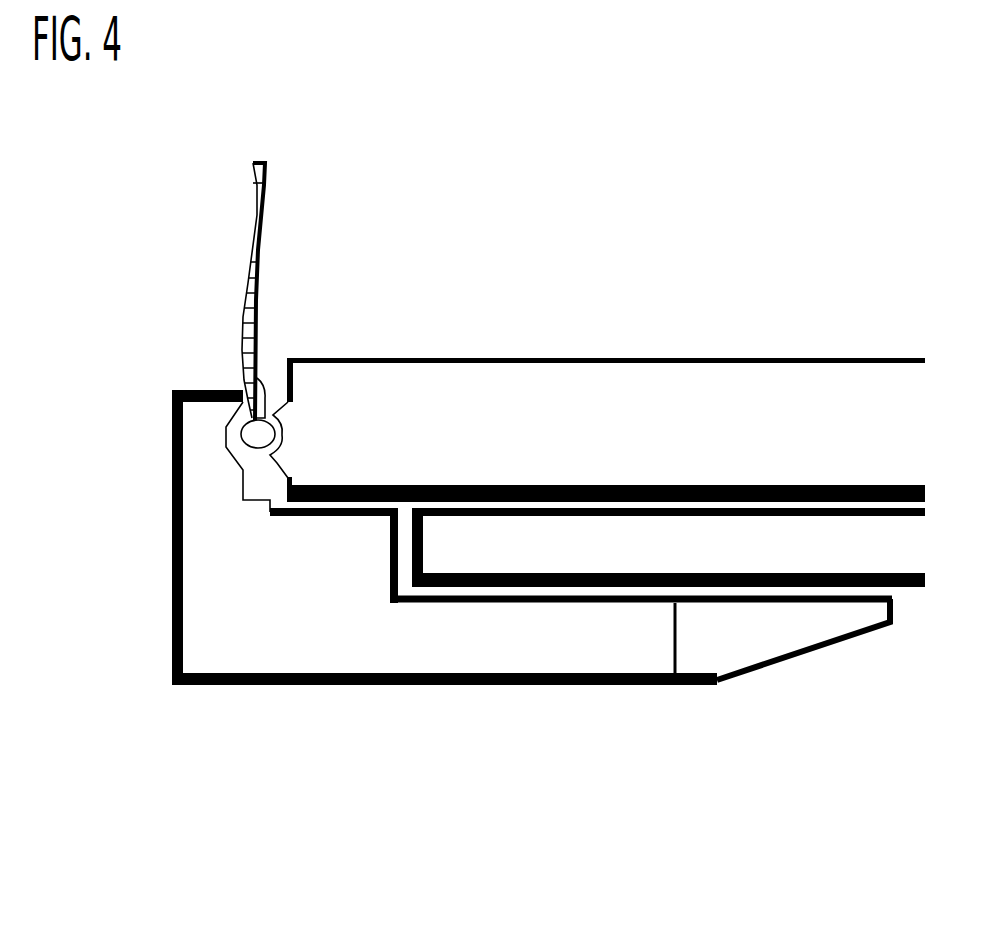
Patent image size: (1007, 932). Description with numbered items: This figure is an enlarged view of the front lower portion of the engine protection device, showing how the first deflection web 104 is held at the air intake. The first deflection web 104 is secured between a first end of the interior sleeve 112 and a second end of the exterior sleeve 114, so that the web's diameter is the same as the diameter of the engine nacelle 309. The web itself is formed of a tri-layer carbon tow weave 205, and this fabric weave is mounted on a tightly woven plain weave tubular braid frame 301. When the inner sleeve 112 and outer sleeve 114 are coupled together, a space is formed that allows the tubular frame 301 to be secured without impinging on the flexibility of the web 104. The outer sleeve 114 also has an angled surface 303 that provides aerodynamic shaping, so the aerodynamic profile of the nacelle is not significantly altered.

The first deflection web 104 is at (278, 240).
The interior sleeve 112 is at (515, 388).
The exterior sleeve 114 is at (340, 627).
The tri-layer carbon tow weave 205 is at (242, 310).
The tubular braid frame 301 is at (258, 434).
The angled surface 303 is at (813, 665).
The engine nacelle 309 is at (565, 548).